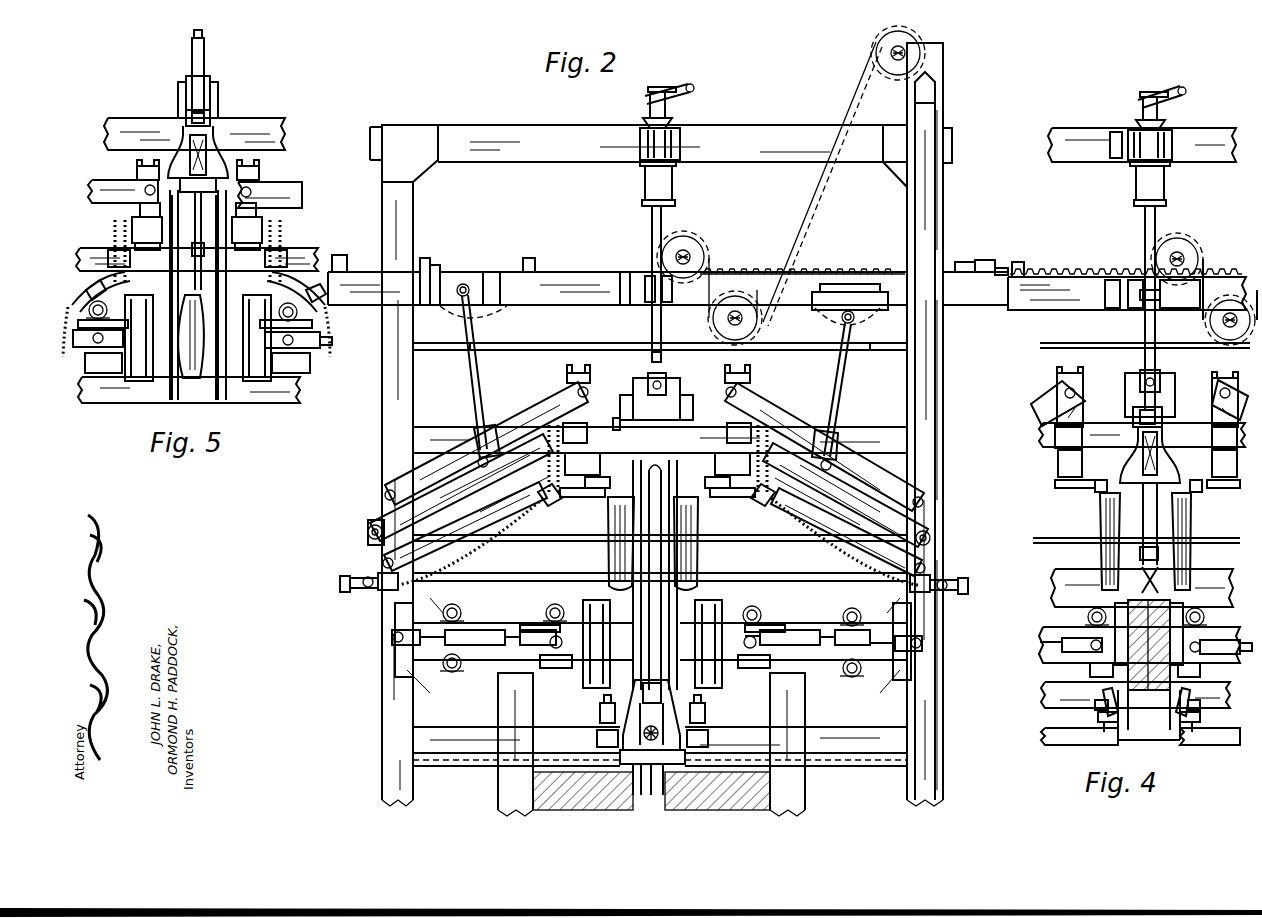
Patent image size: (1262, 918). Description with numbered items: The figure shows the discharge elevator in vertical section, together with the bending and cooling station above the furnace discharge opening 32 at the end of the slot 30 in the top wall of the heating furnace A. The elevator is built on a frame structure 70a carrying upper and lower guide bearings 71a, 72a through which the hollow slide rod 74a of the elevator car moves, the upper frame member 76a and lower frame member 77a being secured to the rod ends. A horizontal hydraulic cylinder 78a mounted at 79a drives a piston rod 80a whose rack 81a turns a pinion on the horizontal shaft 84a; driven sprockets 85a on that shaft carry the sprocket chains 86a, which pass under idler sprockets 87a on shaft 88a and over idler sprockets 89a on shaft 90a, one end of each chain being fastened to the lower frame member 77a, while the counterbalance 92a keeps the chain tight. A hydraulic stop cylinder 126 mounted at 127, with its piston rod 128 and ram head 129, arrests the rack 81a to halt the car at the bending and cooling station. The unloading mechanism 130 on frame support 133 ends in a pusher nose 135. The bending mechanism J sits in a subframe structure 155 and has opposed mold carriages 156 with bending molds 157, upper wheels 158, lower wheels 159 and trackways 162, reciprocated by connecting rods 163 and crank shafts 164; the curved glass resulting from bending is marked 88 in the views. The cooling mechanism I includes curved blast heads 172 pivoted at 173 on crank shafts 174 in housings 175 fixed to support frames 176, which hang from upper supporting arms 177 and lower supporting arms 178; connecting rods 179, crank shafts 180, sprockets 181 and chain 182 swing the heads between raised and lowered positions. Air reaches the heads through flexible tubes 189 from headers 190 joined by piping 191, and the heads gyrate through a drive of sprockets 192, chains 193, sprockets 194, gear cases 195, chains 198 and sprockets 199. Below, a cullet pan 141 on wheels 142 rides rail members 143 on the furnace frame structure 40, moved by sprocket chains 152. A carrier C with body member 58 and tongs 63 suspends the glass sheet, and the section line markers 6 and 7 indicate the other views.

In FIG. 2, the frame structure 70a is at (505, 138).
In FIG. 2, the upper frame member 76a is at (676, 100).
In FIG. 4, the upper frame member 76a is at (1168, 110).
In FIG. 2, the upper guide bearing 71a is at (675, 140).
In FIG. 4, the upper guide bearing 71a is at (1136, 160).
In FIG. 2, the hollow slide rod 74a is at (652, 225).
In FIG. 5, the hollow slide rod 74a is at (206, 60).
In FIG. 4, the hollow slide rod 74a is at (1156, 216).
In FIG. 2, the lower guide bearing 72a is at (648, 275).
In FIG. 4, the lower guide bearing 72a is at (1170, 300).
In FIG. 2, the driven sprocket 85a is at (683, 236).
In FIG. 4, the driven sprocket 85a is at (1195, 244).
In FIG. 2, the horizontal shaft 84a is at (692, 251).
In FIG. 2, the idler sprocket 87a is at (713, 323).
In FIG. 4, the idler sprocket 87a is at (1225, 343).
In FIG. 2, the shaft 88a is at (748, 322).
In FIG. 2, the idler sprocket 89a is at (876, 57).
In FIG. 2, the shaft 90a is at (905, 50).
In FIG. 2, the sprocket chain 86a is at (826, 178).
In FIG. 4, the sprocket chain 86a is at (1205, 262).
In FIG. 2, the counterbalance 92a is at (936, 92).
In FIG. 2, the rack 81a is at (752, 268).
In FIG. 4, the rack 81a is at (1068, 272).
In FIG. 2, the piston rod 80a is at (960, 262).
In FIG. 2, the mounting 79a is at (985, 258).
In FIG. 2, the hydraulic cylinder 78a is at (998, 266).
In FIG. 2, the hydraulic stop cylinder 126 is at (360, 263).
In FIG. 2, the mounting 127 is at (340, 256).
In FIG. 2, the piston rod 128 is at (465, 265).
In FIG. 4, the piston rod 128 is at (1032, 295).
In FIG. 2, the ram head 129 is at (530, 258).
In FIG. 4, the ram head 129 is at (1022, 262).
In FIG. 2, the crank shaft 180 is at (468, 282).
In FIG. 2, the sprocket 181 is at (495, 318).
In FIG. 2, the sprocket chain 182 is at (500, 352).
In FIG. 2, the connecting rod 179 is at (480, 398).
In FIG. 2, the support frame 176 is at (560, 375).
In FIG. 5, the support frame 176 is at (138, 172).
In FIG. 4, the support frame 176 is at (1057, 380).
In FIG. 2, the upper supporting arm 177 is at (435, 440).
In FIG. 5, the upper supporting arm 177 is at (112, 182).
In FIG. 4, the upper supporting arm 177 is at (1032, 410).
In FIG. 2, the sprocket 194 is at (545, 412).
In FIG. 5, the sprocket 194 is at (112, 218).
In FIG. 2, the discharge elevator unloading mechanism 130 is at (668, 380).
In FIG. 5, the discharge elevator unloading mechanism 130 is at (169, 63).
In FIG. 4, the discharge elevator unloading mechanism 130 is at (1171, 372).
In FIG. 2, the frame support 133 is at (690, 392).
In FIG. 5, the frame support 133 is at (220, 100).
In FIG. 2, the pusher nose 135 is at (618, 416).
In FIG. 2, the gear case 195 is at (658, 433).
In FIG. 5, the gear case 195 is at (197, 226).
In FIG. 4, the gear case 195 is at (1146, 436).
In FIG. 2, the crank shaft 174 is at (657, 460).
In FIG. 4, the crank shaft 174 is at (1078, 480).
In FIG. 2, the pivotal mounting 173 is at (605, 480).
In FIG. 4, the pivotal mounting 173 is at (1104, 482).
In FIG. 2, the housing 175 is at (580, 497).
In FIG. 5, the housing 175 is at (262, 300).
In FIG. 4, the housing 175 is at (1065, 490).
In FIG. 2, the chain 193 is at (540, 470).
In FIG. 5, the chain 193 is at (108, 252).
In FIG. 2, the chain 198 is at (420, 505).
In FIG. 2, the sprocket 199 is at (372, 526).
In FIG. 2, the sprocket 192 is at (540, 500).
In FIG. 5, the sprocket 192 is at (88, 290).
In FIG. 2, the air blast head 172 is at (611, 524).
In FIG. 5, the air blast head 172 is at (160, 402).
In FIG. 4, the air blast head 172 is at (1188, 528).
In FIG. 2, the flexible tube 189 is at (527, 516).
In FIG. 5, the flexible tube 189 is at (64, 345).
In FIG. 2, the piping 191 is at (360, 570).
In FIG. 2, the header 190 is at (372, 592).
In FIG. 2, the lower supporting arm 178 is at (425, 575).
In FIG. 2, the upper wheel 158 is at (458, 602).
In FIG. 5, the upper wheel 158 is at (280, 318).
In FIG. 4, the upper wheel 158 is at (1146, 617).
In FIG. 2, the bending mold 157 is at (597, 598).
In FIG. 5, the bending mold 157 is at (143, 382).
In FIG. 4, the bending mold 157 is at (1115, 610).
In FIG. 2, the mold carriage 156 is at (540, 630).
In FIG. 5, the mold carriage 156 is at (104, 373).
In FIG. 4, the mold carriage 156 is at (1090, 658).
In FIG. 2, the connecting rod 163 is at (482, 630).
In FIG. 5, the connecting rod 163 is at (208, 342).
In FIG. 4, the connecting rod 163 is at (1072, 638).
In FIG. 2, the crank shaft 164 is at (390, 633).
In FIG. 2, the subframe structure 155 is at (393, 650).
In FIG. 2, the trackway 162 is at (540, 665).
In FIG. 2, the lower wheel 159 is at (445, 673).
In FIG. 2, the rail member 143 is at (598, 712).
In FIG. 4, the rail member 143 is at (1098, 718).
In FIG. 2, the body member 58 is at (618, 752).
In FIG. 5, the body member 58 is at (180, 178).
In FIG. 2, the sprocket chain 152 is at (708, 742).
In FIG. 4, the sprocket chain 152 is at (1095, 700).
In FIG. 2, the furnace discharge opening 32 is at (625, 790).
In FIG. 2, the slot 30 is at (658, 798).
In FIG. 2, the lower frame member 77a is at (665, 675).
In FIG. 5, the lower frame member 77a is at (184, 112).
In FIG. 4, the lower frame member 77a is at (1133, 406).
In FIG. 2, the section line 6 is at (325, 617).
In FIG. 5, the section line 7 is at (81, 170).
In FIG. 2, the cooling mechanism I is at (800, 400).
In FIG. 4, the cooling mechanism I is at (1091, 531).
In FIG. 2, the bending mechanism J is at (483, 671).
In FIG. 4, the bending mechanism J is at (1076, 663).
In FIG. 2, the heating furnace A is at (805, 789).
In FIG. 4, the heating furnace A is at (1040, 740).
In FIG. 5, the carrier C is at (215, 165).
In FIG. 4, the carrier C is at (1168, 455).
In FIG. 5, the blade 88 is at (204, 322).
In FIG. 4, the blade 88 is at (1170, 605).
In FIG. 4, the tongs 63 is at (1130, 582).
In FIG. 4, the wheel 142 is at (1108, 690).
In FIG. 4, the cullet pan 141 is at (1128, 725).
In FIG. 4, the furnace frame structure 40 is at (1062, 725).